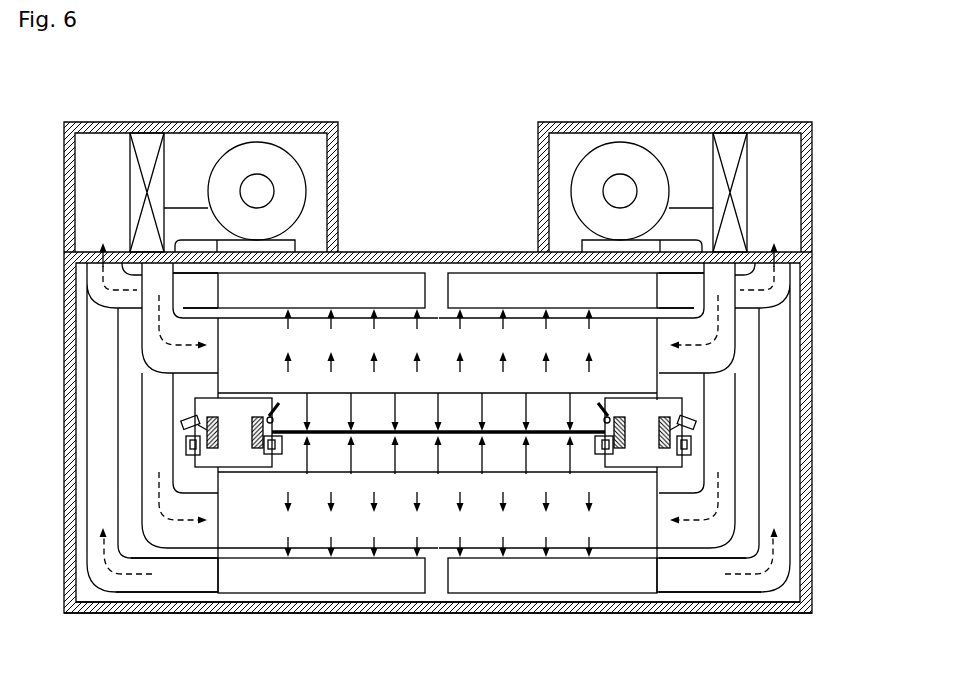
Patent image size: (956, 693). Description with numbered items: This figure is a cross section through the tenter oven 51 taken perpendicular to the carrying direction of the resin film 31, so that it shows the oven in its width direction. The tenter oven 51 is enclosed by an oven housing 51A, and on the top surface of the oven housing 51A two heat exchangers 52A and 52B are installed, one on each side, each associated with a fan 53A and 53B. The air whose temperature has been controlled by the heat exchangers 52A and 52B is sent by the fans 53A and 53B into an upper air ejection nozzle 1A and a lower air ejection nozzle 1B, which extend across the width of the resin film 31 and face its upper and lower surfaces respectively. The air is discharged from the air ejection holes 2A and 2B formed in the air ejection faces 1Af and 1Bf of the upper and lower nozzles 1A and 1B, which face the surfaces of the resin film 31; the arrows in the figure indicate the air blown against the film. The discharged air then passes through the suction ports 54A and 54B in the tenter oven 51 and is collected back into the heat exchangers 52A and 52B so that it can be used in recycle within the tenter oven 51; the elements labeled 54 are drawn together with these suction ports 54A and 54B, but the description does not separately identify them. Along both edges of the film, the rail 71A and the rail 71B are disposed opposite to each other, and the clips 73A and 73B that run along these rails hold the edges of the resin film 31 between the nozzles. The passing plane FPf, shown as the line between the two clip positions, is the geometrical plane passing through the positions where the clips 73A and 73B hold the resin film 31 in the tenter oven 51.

The tenter oven 51 is at (141, 111).
The oven housing 51A is at (146, 613).
The heat exchanger 52A is at (165, 150).
The heat exchanger 52B is at (712, 150).
The fan 53A is at (290, 150).
The fan 53B is at (587, 150).
The filter 54 is at (340, 288).
The suction port 54A is at (352, 300).
The suction port 54B is at (352, 560).
The upper air ejection nozzle 1A is at (425, 345).
The air ejection face 1Af is at (595, 393).
The air ejection hole 2A is at (573, 393).
The lower air ejection nozzle 1B is at (430, 528).
The air ejection face 1Bf is at (560, 472).
The air ejection hole 2B is at (527, 472).
The passing plane FPf is at (372, 430).
The resin film 31 is at (458, 436).
The rail 71A is at (252, 448).
The rail 71B is at (623, 450).
The clip 73A is at (274, 457).
The clip 73B is at (603, 453).